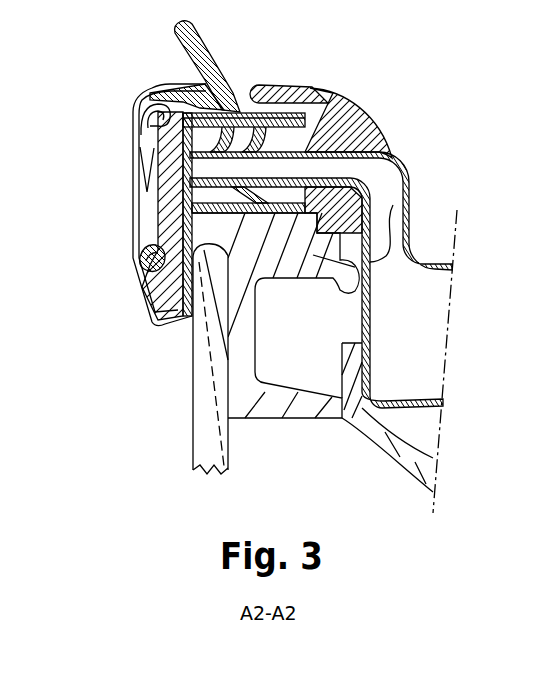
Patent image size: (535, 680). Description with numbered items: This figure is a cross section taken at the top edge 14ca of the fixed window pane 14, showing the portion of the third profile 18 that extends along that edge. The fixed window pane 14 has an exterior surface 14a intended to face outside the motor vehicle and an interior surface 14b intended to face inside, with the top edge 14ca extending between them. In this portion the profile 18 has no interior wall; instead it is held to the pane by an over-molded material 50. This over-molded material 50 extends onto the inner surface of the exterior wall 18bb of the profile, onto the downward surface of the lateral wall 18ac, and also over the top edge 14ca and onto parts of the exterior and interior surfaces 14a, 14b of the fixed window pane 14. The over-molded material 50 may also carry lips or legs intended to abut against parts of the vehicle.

The third profile 18 is at (383, 106).
The lateral wall 18ac is at (300, 204).
The exterior wall 18bb is at (163, 219).
The over-molded material 50 is at (409, 194).
The top edge 14ca is at (138, 270).
The interior surface 14b is at (228, 333).
The exterior surface 14a is at (193, 353).
The fixed window pane 14 is at (172, 398).